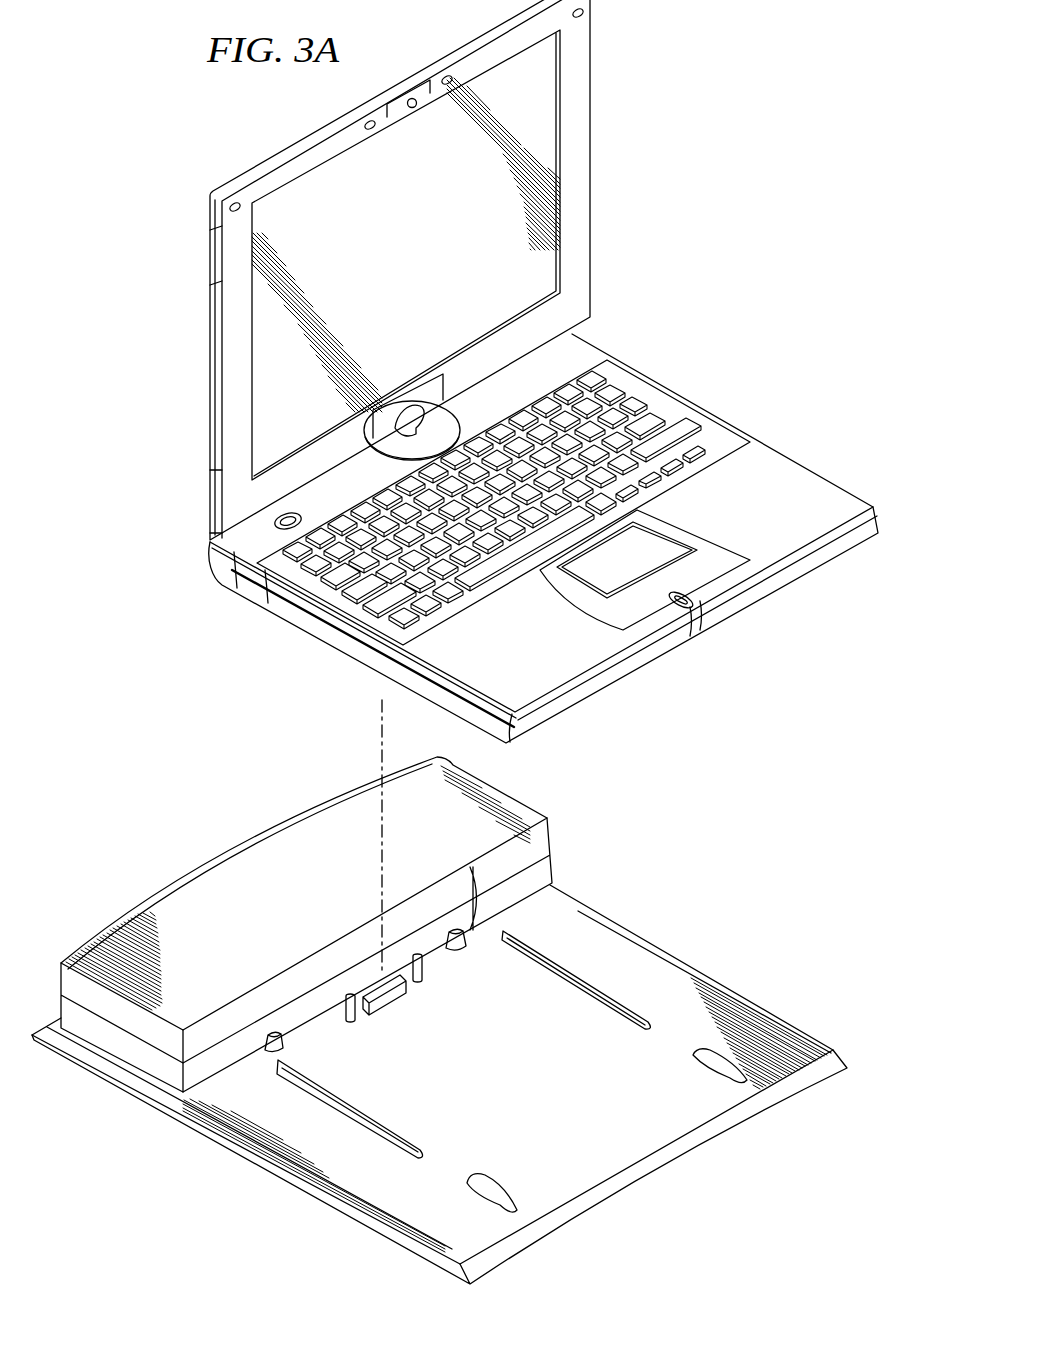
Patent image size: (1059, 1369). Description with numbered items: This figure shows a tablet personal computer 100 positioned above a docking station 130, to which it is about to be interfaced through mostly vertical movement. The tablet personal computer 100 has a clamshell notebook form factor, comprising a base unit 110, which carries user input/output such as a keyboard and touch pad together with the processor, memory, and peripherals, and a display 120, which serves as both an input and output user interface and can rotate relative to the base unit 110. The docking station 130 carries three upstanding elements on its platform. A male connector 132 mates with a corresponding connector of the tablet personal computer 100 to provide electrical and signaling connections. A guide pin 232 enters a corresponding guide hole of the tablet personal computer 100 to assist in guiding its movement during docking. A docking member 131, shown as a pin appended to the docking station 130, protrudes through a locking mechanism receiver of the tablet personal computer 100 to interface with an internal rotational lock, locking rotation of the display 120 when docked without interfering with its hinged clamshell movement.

The tablet personal computer 100 is at (744, 254).
The base unit 110 is at (783, 468).
The display 120 is at (578, 105).
The docking station 130 is at (203, 853).
The docking member 131 is at (356, 1008).
The connector 132 is at (402, 996).
The guide pin 232 is at (423, 966).